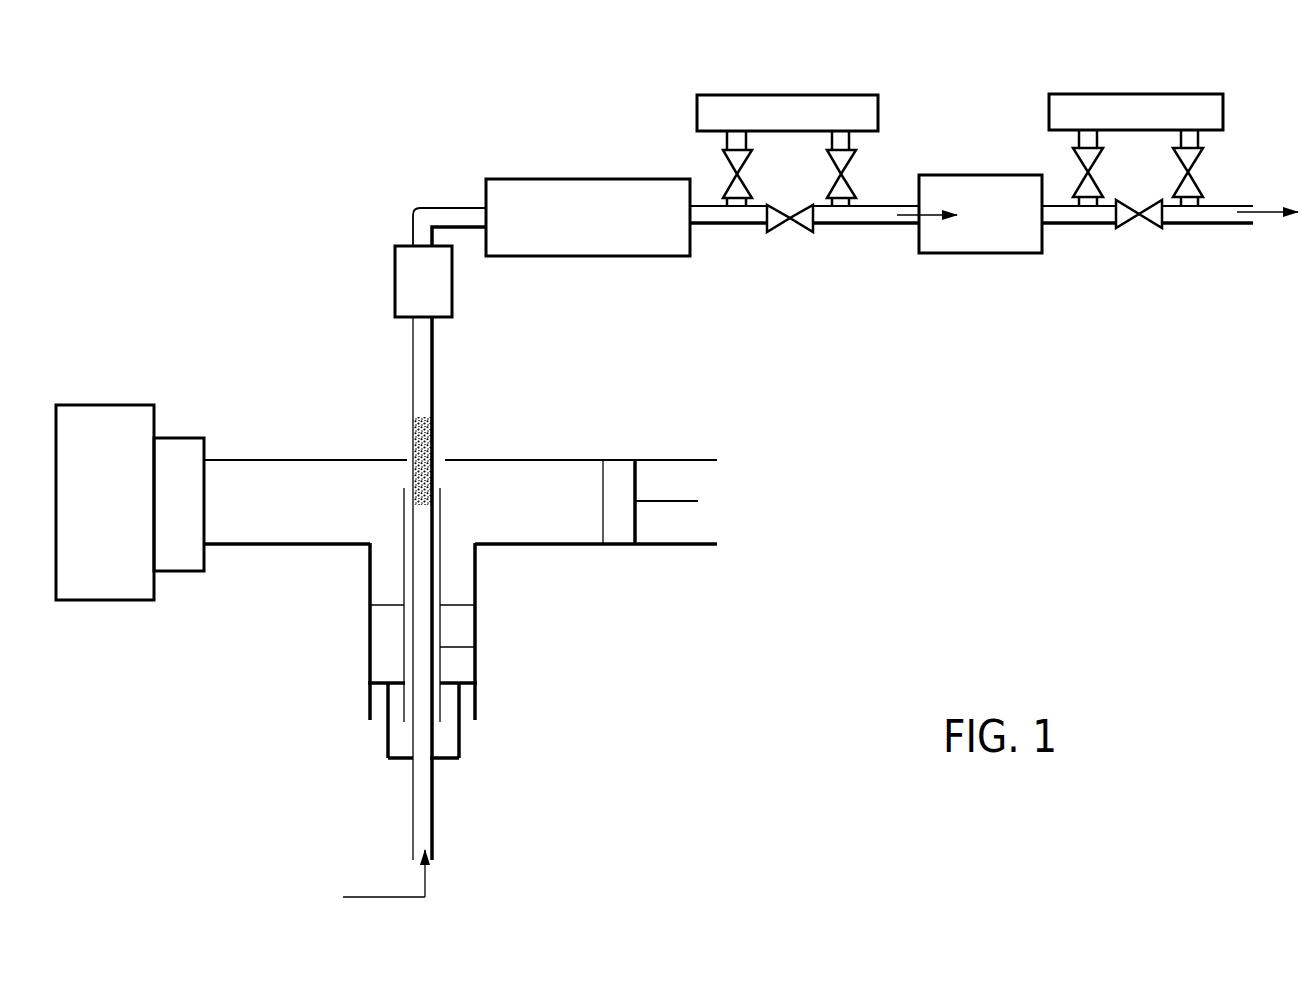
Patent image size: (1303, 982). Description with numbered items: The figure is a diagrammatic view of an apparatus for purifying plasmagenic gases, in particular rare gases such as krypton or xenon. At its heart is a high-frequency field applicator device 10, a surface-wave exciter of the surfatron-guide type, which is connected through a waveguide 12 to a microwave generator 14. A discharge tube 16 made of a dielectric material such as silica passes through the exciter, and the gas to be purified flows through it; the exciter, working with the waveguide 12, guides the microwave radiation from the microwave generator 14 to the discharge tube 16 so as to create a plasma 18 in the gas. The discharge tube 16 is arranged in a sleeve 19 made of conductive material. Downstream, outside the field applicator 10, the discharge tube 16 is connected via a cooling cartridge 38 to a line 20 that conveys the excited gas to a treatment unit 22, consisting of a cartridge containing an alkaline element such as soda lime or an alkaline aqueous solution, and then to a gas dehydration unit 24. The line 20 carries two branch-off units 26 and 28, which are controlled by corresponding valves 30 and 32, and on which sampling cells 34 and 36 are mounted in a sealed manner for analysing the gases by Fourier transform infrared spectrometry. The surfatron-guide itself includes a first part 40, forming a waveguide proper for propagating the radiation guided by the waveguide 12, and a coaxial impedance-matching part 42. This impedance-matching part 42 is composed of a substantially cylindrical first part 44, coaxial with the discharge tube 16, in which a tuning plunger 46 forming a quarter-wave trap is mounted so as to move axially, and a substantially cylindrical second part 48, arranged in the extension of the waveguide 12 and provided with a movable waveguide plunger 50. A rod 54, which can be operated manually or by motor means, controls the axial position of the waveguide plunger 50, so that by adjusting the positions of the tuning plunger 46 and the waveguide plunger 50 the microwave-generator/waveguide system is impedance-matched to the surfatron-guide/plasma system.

The high-frequency field applicator device 10 is at (332, 557).
The waveguide 12 is at (277, 458).
The microwave generator 14 is at (105, 403).
The discharge tube 16 is at (434, 580).
The plasma 18 is at (432, 445).
The sleeve 19 is at (440, 647).
The line 20 is at (462, 203).
The treatment unit 22 is at (575, 193).
The gas dehydration unit 24 is at (977, 238).
The branch-off unit 26 is at (723, 185).
The branch-off unit 28 is at (1202, 182).
The valve 30 is at (790, 230).
The valve 32 is at (1138, 225).
The sampling cell 34 is at (787, 107).
The sampling cell 36 is at (1133, 105).
The cooling cartridge 38 is at (408, 279).
The first part 40 is at (403, 457).
The impedance-matching part 42 is at (537, 558).
The first part 44 is at (360, 557).
The tuning plunger 46 is at (380, 646).
The second part 48 is at (537, 457).
The waveguide plunger 50 is at (637, 522).
The rod 54 is at (675, 498).